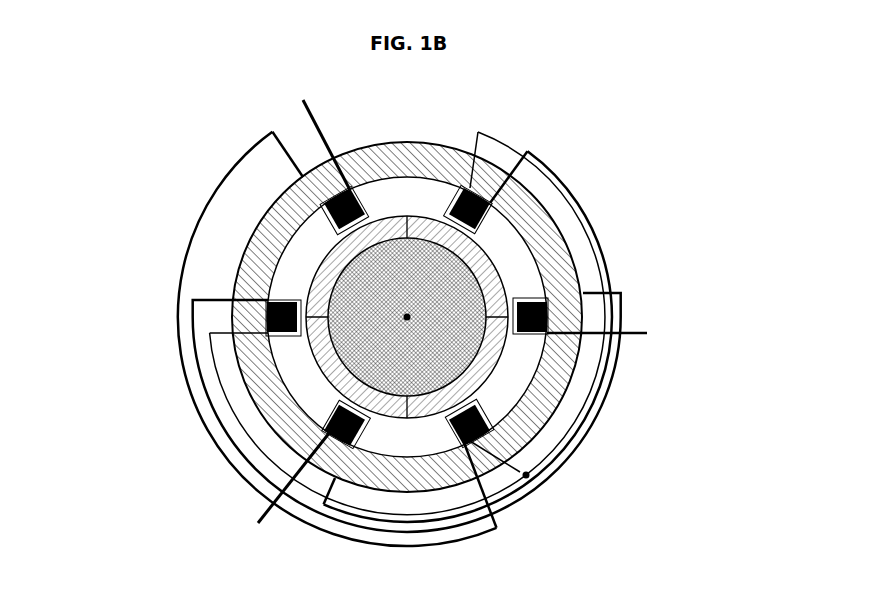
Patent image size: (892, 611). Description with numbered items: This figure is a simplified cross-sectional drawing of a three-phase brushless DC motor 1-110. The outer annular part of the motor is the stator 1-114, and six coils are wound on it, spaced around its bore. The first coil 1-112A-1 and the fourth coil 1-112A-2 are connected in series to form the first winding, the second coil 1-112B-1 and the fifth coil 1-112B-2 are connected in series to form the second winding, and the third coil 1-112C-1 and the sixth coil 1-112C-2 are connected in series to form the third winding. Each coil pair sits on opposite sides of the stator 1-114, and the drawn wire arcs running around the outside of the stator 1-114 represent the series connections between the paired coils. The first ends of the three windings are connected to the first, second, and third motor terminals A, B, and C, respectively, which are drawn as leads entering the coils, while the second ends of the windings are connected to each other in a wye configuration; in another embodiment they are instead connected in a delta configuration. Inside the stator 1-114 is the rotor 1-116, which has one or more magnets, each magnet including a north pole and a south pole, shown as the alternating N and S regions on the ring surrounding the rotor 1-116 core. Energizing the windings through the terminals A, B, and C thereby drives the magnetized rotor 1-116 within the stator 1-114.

The motor 1-110 is at (126, 100).
The first coil 1-112A-1 is at (325, 168).
The fourth coil 1-112A-2 is at (468, 440).
The second coil 1-112B-1 is at (332, 415).
The fifth coil 1-112B-2 is at (472, 190).
The third coil 1-112C-1 is at (540, 297).
The sixth coil 1-112C-2 is at (268, 300).
The stator 1-114 is at (258, 247).
The rotor 1-116 is at (367, 323).
The first motor terminal A is at (321, 135).
The second motor terminal B is at (285, 492).
The third motor terminal C is at (607, 335).